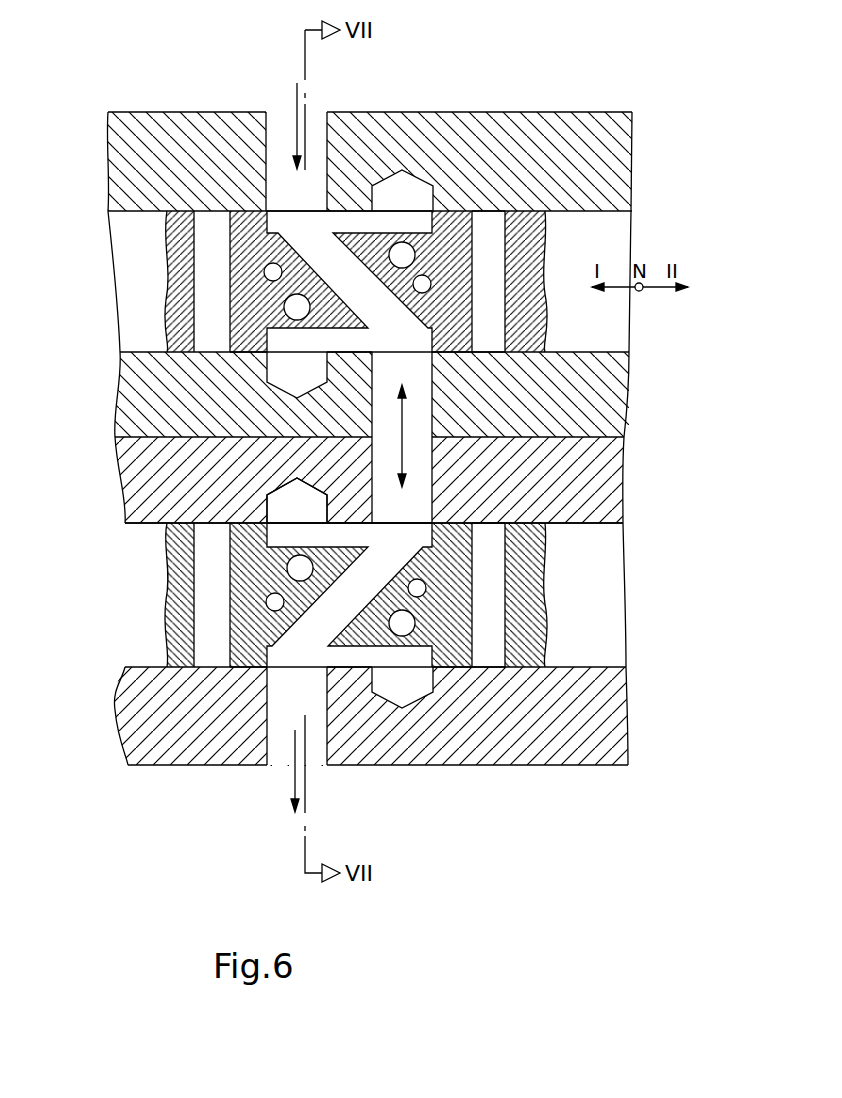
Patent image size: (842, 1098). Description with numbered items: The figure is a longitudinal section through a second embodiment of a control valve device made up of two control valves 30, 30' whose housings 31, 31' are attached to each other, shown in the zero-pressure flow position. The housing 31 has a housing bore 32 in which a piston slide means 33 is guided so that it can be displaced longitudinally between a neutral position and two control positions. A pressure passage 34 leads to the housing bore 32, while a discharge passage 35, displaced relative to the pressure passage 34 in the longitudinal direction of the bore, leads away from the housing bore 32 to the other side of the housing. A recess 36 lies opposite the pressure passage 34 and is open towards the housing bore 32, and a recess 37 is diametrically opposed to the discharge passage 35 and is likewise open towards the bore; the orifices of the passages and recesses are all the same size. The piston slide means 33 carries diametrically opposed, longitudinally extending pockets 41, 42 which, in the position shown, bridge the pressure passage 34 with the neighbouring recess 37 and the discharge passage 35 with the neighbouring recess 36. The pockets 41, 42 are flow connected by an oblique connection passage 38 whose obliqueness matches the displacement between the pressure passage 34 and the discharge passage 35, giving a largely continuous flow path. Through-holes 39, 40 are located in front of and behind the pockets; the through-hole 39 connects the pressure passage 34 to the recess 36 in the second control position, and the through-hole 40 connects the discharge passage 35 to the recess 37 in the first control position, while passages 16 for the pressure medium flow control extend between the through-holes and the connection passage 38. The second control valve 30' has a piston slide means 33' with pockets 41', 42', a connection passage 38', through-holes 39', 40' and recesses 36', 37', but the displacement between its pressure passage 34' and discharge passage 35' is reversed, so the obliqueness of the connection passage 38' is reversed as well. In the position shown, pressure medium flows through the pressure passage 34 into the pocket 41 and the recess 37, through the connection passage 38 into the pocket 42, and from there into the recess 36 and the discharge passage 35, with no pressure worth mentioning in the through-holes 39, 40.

The passages for the pressure medium flow control 16 is at (403, 251).
The control valve 30 is at (370, 87).
The housing 31 is at (369, 137).
The housing bore 32 is at (609, 226).
The piston slide means 33 is at (604, 281).
The pressure passage 34 is at (349, 207).
The discharge passage 35 is at (537, 437).
The recess 36 is at (341, 394).
The recess 37 is at (412, 137).
The connection passage 38 is at (351, 281).
The through-hole 39 is at (141, 281).
The through-hole 40 is at (587, 281).
The pocket 41 is at (266, 143).
The pocket 42 is at (262, 281).
The control valve 30' is at (424, 497).
The housing 31' is at (412, 480).
The piston slide means 33' is at (607, 595).
The pressure passage 34' is at (488, 585).
The discharge passage 35' is at (345, 644).
The recess 36' is at (540, 688).
The recess 37' is at (191, 500).
The connection passage 38' is at (351, 595).
The through-hole 39' is at (437, 595).
The through-hole 40' is at (280, 595).
The pocket 41' is at (191, 643).
The pocket 42' is at (267, 595).